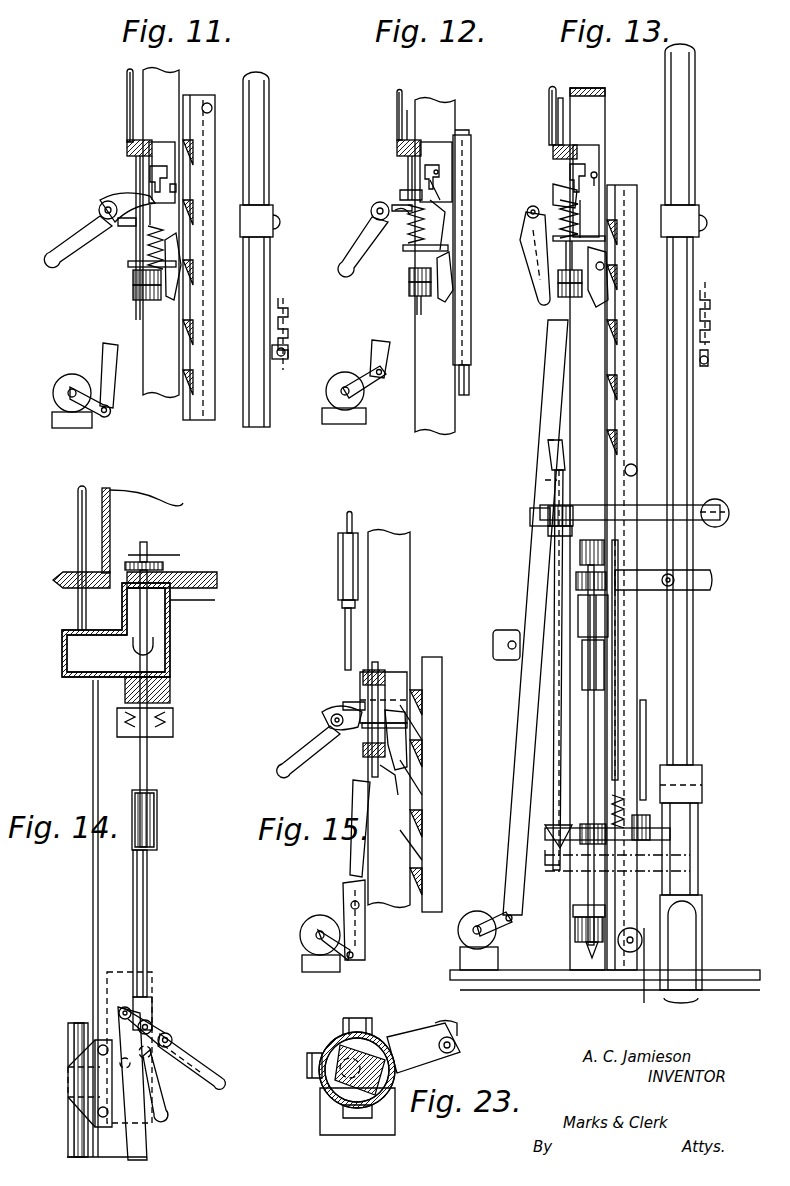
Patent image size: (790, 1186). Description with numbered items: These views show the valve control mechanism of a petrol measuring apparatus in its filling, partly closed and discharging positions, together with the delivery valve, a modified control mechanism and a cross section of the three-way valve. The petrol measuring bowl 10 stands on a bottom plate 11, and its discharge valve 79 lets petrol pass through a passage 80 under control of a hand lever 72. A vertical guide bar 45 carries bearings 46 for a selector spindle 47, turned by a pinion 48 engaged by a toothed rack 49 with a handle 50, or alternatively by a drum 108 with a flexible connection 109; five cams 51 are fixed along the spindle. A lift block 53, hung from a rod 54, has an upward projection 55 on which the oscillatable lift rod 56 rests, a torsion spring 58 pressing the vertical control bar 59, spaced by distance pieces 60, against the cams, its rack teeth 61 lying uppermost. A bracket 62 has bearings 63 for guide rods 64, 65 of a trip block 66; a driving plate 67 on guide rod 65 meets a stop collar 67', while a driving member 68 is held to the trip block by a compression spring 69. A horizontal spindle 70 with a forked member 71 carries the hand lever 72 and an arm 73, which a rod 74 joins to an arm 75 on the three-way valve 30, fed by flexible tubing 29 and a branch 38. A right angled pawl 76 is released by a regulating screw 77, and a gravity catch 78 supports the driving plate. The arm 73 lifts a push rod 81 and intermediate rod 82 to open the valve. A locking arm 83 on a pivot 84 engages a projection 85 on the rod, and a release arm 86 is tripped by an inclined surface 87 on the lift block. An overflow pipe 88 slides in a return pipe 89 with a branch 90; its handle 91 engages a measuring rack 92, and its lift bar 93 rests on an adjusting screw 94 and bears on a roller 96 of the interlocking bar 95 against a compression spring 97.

In FIG. 14, the petrol measuring bowl 10 is at (112, 520).
In FIG. 14, the bottom plate 11 is at (218, 575).
In FIG. 23, the flexible tubing 29 is at (307, 1065).
In FIG. 11, the three way valve 30 is at (60, 385).
In FIG. 12, the three way valve 30 is at (360, 403).
In FIG. 13, the three way valve 30 is at (495, 935).
In FIG. 15, the three way valve 30 is at (318, 920).
In FIG. 23, the three way valve 30 is at (335, 1042).
In FIG. 23, the branch 38 is at (352, 1018).
In FIG. 11, the vertical guide bar 45 is at (161, 233).
In FIG. 12, the vertical guide bar 45 is at (435, 266).
In FIG. 13, the vertical guide bar 45 is at (604, 117).
In FIG. 14, the vertical guide bar 45 is at (108, 933).
In FIG. 15, the vertical guide bar 45 is at (389, 719).
In FIG. 13, the bearings 46 is at (604, 555).
In FIG. 13, the selector spindle 47 is at (588, 894).
In FIG. 13, the pinion 48 is at (576, 580).
In FIG. 13, the toothed rack 49 is at (700, 575).
In FIG. 13, the handle 50 is at (675, 582).
In FIG. 13, the cams 51 is at (604, 642).
In FIG. 13, the lift block 53 is at (672, 834).
In FIG. 13, the rod 54 is at (647, 712).
In FIG. 13, the upward projection 55 is at (617, 864).
In FIG. 12, the oscillatable lift rod 56 is at (470, 375).
In FIG. 13, the oscillatable lift rod 56 is at (618, 675).
In FIG. 13, the torsion spring 58 is at (612, 812).
In FIG. 11, the vertical control bar 59 is at (205, 190).
In FIG. 12, the vertical control bar 59 is at (470, 170).
In FIG. 13, the vertical control bar 59 is at (636, 308).
In FIG. 15, the vertical control bar 59 is at (442, 777).
In FIG. 13, the distance pieces 60 is at (637, 468).
In FIG. 11, the rack teeth 61 is at (193, 275).
In FIG. 12, the rack teeth 61 is at (445, 205).
In FIG. 13, the rack teeth 61 is at (607, 355).
In FIG. 15, the rack teeth 61 is at (410, 830).
In FIG. 11, the bracket 62 is at (149, 172).
In FIG. 12, the bracket 62 is at (398, 165).
In FIG. 13, the bracket 62 is at (585, 150).
In FIG. 14, the bracket 62 is at (150, 1012).
In FIG. 15, the bracket 62 is at (362, 680).
In FIG. 11, the bearings 63 is at (127, 146).
In FIG. 12, the bearings 63 is at (397, 145).
In FIG. 15, the bearings 63 is at (378, 670).
In FIG. 11, the guide rod 64 is at (150, 160).
In FIG. 15, the guide rod 64 is at (372, 690).
In FIG. 11, the guide rod 65 is at (128, 264).
In FIG. 12, the guide rod 65 is at (420, 256).
In FIG. 13, the guide rod 65 is at (553, 238).
In FIG. 15, the guide rod 65 is at (388, 782).
In FIG. 11, the trip block 66 is at (112, 196).
In FIG. 12, the trip block 66 is at (400, 193).
In FIG. 13, the trip block 66 is at (553, 190).
In FIG. 11, the driving plate 67 is at (130, 279).
In FIG. 12, the driving plate 67 is at (399, 271).
In FIG. 13, the driving plate 67 is at (610, 255).
In FIG. 11, the stop collar 67' is at (130, 294).
In FIG. 12, the stop collar 67' is at (398, 304).
In FIG. 13, the stop collar 67' is at (542, 290).
In FIG. 11, the driving member 68 is at (148, 244).
In FIG. 12, the driving member 68 is at (440, 222).
In FIG. 13, the driving member 68 is at (585, 205).
In FIG. 15, the driving member 68 is at (405, 727).
In FIG. 11, the compression spring 69 is at (162, 232).
In FIG. 12, the compression spring 69 is at (410, 220).
In FIG. 13, the compression spring 69 is at (580, 222).
In FIG. 11, the horizontal spindle 70 is at (99, 208).
In FIG. 12, the horizontal spindle 70 is at (373, 211).
In FIG. 13, the horizontal spindle 70 is at (528, 208).
In FIG. 14, the horizontal spindle 70 is at (173, 1038).
In FIG. 15, the horizontal spindle 70 is at (331, 718).
In FIG. 11, the forked member 71 is at (118, 221).
In FIG. 12, the forked member 71 is at (392, 205).
In FIG. 15, the forked member 71 is at (343, 705).
In FIG. 11, the hand lever 72 is at (60, 250).
In FIG. 12, the hand lever 72 is at (366, 232).
In FIG. 13, the hand lever 72 is at (535, 270).
In FIG. 14, the hand lever 72 is at (165, 1098).
In FIG. 15, the hand lever 72 is at (310, 748).
In FIG. 14, the arm 73 is at (152, 1028).
In FIG. 11, the rod 74 is at (106, 352).
In FIG. 12, the rod 74 is at (373, 346).
In FIG. 13, the rod 74 is at (540, 492).
In FIG. 14, the rod 74 is at (147, 1140).
In FIG. 15, the rod 74 is at (352, 866).
In FIG. 23, the rod 74 is at (457, 1028).
In FIG. 11, the arm 75 is at (108, 414).
In FIG. 12, the arm 75 is at (370, 384).
In FIG. 13, the arm 75 is at (500, 915).
In FIG. 15, the arm 75 is at (356, 952).
In FIG. 23, the arm 75 is at (413, 1042).
In FIG. 11, the right angled pawl 76 is at (162, 177).
In FIG. 12, the right angled pawl 76 is at (433, 168).
In FIG. 13, the right angled pawl 76 is at (570, 170).
In FIG. 11, the regulating screw 77 is at (176, 188).
In FIG. 13, the regulating screw 77 is at (598, 175).
In FIG. 11, the gravity catch 78 is at (168, 286).
In FIG. 12, the gravity catch 78 is at (439, 292).
In FIG. 13, the gravity catch 78 is at (610, 268).
In FIG. 14, the valve 79 is at (165, 566).
In FIG. 14, the passage 80 is at (117, 660).
In FIG. 13, the push rod 81 is at (549, 102).
In FIG. 14, the push rod 81 is at (147, 912).
In FIG. 15, the push rod 81 is at (354, 515).
In FIG. 14, the intermediate rod 82 is at (147, 772).
In FIG. 13, the locking arm 83 is at (565, 545).
In FIG. 13, the horizontal pivot 84 is at (508, 645).
In FIG. 13, the projection 85 is at (548, 450).
In FIG. 13, the release arm 86 is at (553, 738).
In FIG. 13, the inclined surface 87 is at (545, 840).
In FIG. 11, the overflow pipe 88 is at (258, 110).
In FIG. 13, the overflow pipe 88 is at (690, 168).
In FIG. 13, the return pipe 89 is at (698, 878).
In FIG. 13, the branch 90 is at (700, 933).
In FIG. 11, the handle 91 is at (288, 352).
In FIG. 13, the handle 91 is at (710, 356).
In FIG. 11, the notched measuring rack 92 is at (286, 320).
In FIG. 13, the notched measuring rack 92 is at (712, 318).
In FIG. 11, the vertical lift bar 93 is at (258, 265).
In FIG. 13, the vertical lift bar 93 is at (690, 260).
In FIG. 13, the adjusting screw 94 is at (703, 776).
In FIG. 13, the interlocking bar 95 is at (721, 516).
In FIG. 13, the roller 96 is at (722, 506).
In FIG. 13, the compression spring 97 is at (552, 530).
In FIG. 13, the drum 108 is at (573, 925).
In FIG. 13, the flexible connection 109 is at (642, 993).